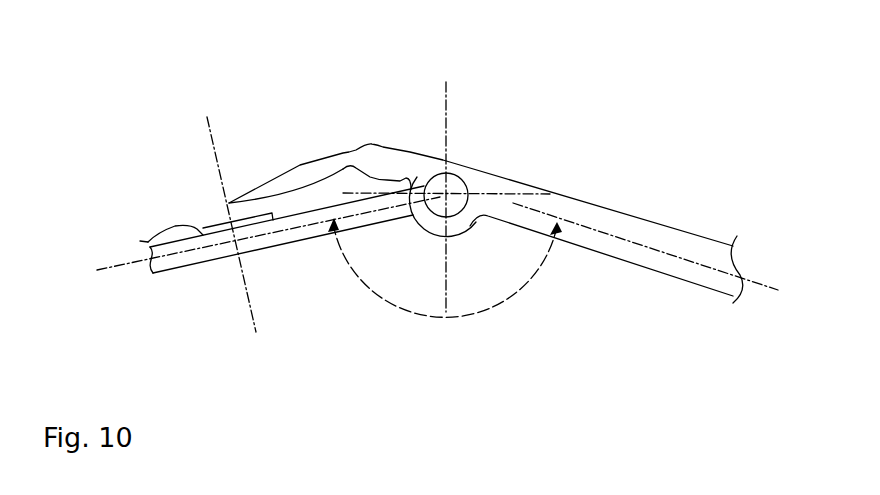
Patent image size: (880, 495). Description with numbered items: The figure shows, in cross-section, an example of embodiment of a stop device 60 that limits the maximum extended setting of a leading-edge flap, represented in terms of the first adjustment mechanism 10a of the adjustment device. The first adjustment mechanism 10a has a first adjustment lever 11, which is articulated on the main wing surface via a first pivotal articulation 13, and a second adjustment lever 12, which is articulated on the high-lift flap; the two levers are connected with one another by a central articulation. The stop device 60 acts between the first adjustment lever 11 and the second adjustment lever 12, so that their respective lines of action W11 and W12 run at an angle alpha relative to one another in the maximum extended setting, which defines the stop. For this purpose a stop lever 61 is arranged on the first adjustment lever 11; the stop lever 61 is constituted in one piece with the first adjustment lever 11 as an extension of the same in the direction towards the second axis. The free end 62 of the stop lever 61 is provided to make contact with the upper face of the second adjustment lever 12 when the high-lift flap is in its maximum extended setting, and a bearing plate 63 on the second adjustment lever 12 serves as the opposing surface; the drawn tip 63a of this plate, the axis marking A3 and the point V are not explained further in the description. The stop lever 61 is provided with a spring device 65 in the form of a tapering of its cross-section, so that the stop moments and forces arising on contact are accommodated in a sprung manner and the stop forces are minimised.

The first adjustment mechanism 10a is at (249, 61).
The stop device 60 is at (560, 105).
The free end of the stop lever 62 is at (229, 203).
The spring device 65 is at (357, 120).
The stop lever 61 is at (268, 150).
The bearing plate 63 is at (169, 206).
The tip of engagement piece 63a is at (140, 241).
The second adjustment lever 12 is at (168, 268).
The line of action of the second adjustment lever W12 is at (203, 248).
The first adjustment lever 11 is at (696, 282).
The line of action of the first adjustment lever W11 is at (668, 251).
The first pivotal articulation 13 is at (457, 209).
The pivot axis A3 is at (486, 136).
The notch vertex V is at (350, 152).